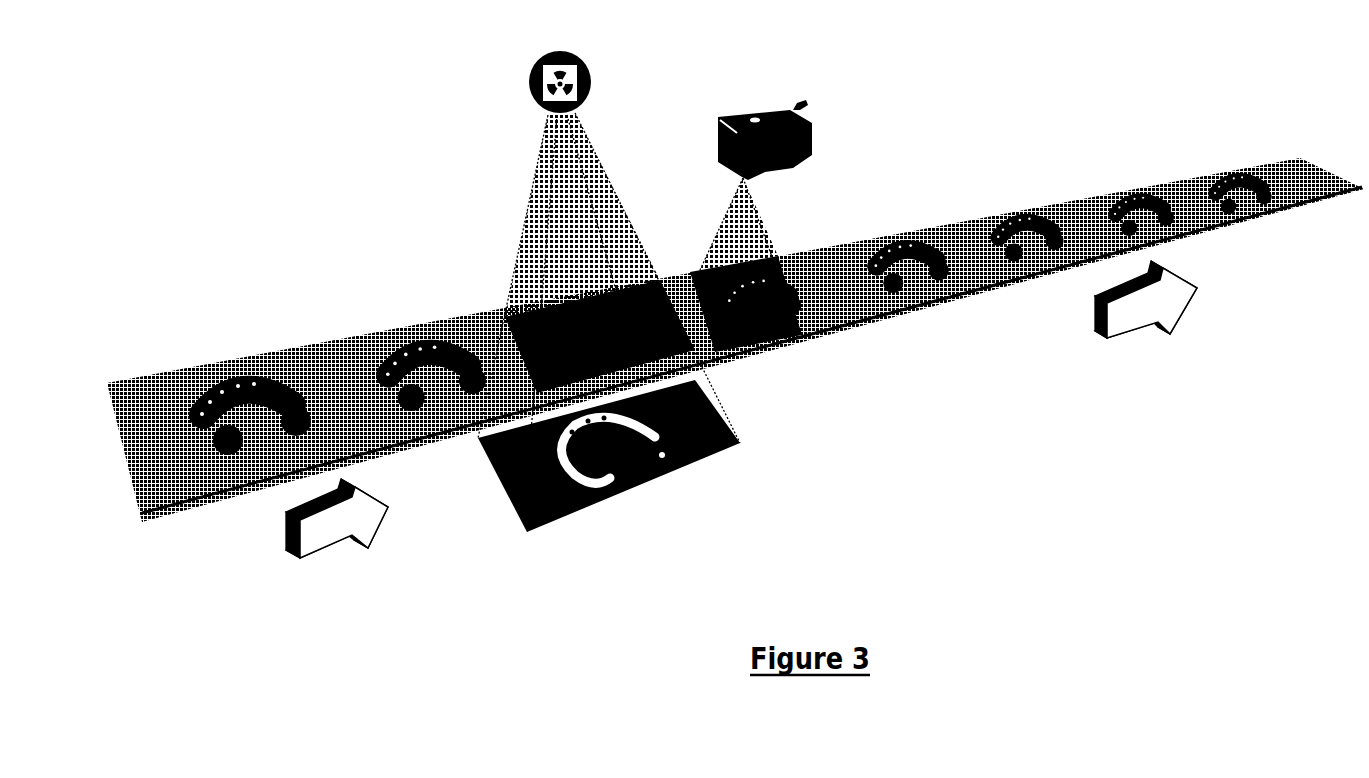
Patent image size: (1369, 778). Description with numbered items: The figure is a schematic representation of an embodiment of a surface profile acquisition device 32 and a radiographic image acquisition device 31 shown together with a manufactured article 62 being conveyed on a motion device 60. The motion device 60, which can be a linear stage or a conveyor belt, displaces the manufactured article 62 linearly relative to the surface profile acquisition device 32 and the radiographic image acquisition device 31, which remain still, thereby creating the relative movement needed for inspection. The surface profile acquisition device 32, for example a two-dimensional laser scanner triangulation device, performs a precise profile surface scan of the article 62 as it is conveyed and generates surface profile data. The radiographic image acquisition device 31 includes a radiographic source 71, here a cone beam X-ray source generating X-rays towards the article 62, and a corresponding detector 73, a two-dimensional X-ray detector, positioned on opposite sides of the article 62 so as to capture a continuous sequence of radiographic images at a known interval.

The radiographic image acquisition device 31 is at (480, 160).
The surface profile acquisition device 32 is at (830, 158).
The motion device 60 is at (313, 360).
The manufactured article 62 is at (413, 340).
The radiographic source 71 is at (592, 86).
The detector 73 is at (737, 435).